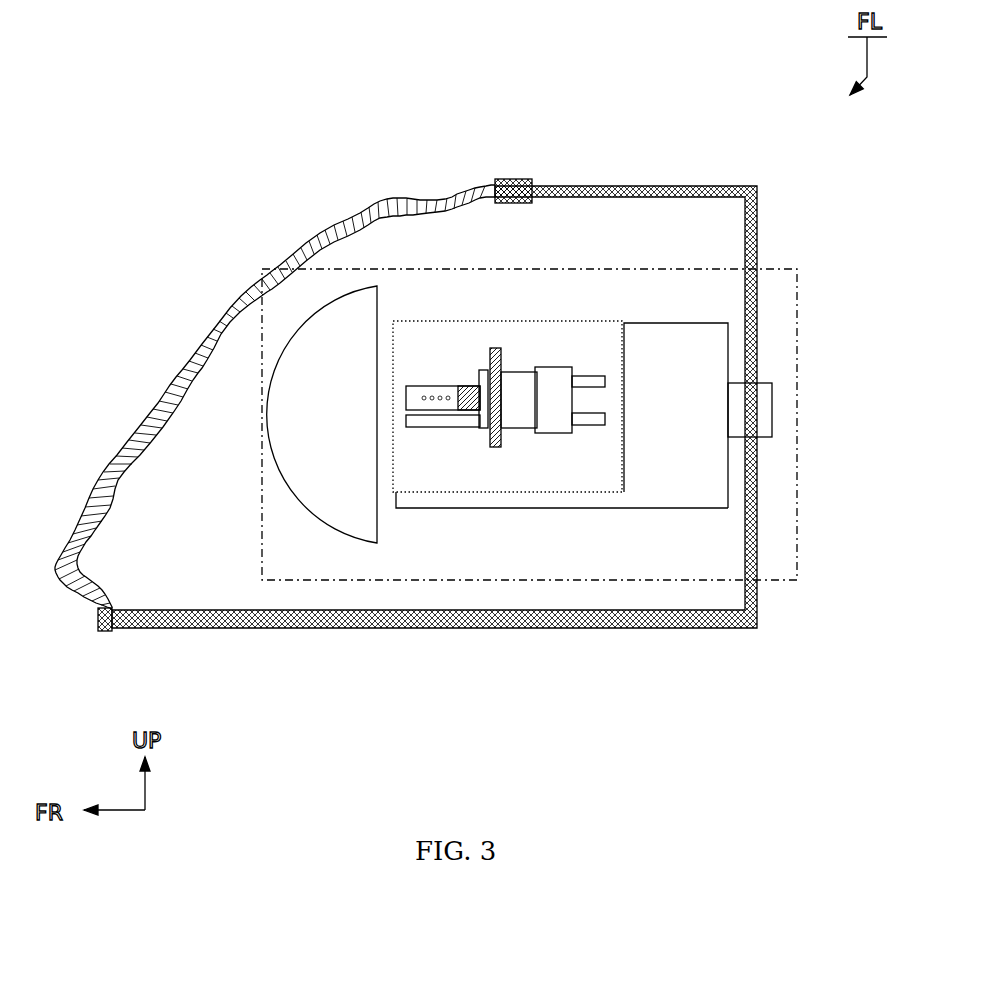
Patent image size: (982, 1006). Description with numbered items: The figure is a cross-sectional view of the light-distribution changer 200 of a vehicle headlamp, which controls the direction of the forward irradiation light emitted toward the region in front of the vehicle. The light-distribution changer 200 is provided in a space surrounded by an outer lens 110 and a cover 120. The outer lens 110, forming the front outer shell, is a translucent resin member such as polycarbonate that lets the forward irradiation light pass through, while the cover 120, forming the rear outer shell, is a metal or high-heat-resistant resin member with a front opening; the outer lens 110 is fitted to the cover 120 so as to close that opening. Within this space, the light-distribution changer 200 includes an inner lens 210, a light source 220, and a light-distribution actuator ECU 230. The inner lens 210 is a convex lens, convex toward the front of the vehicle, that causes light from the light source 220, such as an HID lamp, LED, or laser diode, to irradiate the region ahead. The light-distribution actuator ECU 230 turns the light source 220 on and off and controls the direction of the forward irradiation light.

The outer lens 110 is at (178, 368).
The cover 120 is at (605, 187).
The light-distribution changer 200 is at (792, 268).
The inner lens 210 is at (333, 497).
The light source 220 is at (515, 465).
The light-distribution actuator ECU 230 is at (663, 458).